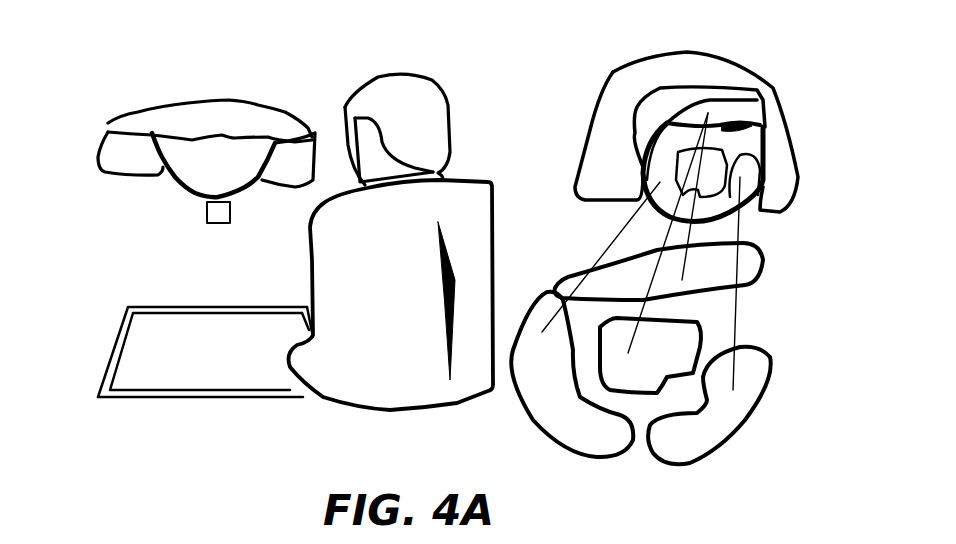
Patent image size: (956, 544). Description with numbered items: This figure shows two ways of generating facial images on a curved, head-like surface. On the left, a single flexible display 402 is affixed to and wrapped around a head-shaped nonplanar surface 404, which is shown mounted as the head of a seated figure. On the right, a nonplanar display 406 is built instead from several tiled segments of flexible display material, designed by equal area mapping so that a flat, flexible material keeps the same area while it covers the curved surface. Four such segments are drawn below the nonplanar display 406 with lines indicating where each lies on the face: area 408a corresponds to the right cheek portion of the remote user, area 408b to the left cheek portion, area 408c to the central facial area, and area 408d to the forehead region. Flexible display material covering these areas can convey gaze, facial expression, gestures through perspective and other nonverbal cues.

The flexible display 402 is at (137, 117).
The head-shaped nonplanar surface 404 is at (183, 183).
The nonplanar display 406 is at (777, 92).
The area 408a is at (543, 427).
The area 408b is at (697, 450).
The area 408c is at (638, 393).
The area 408d is at (773, 272).